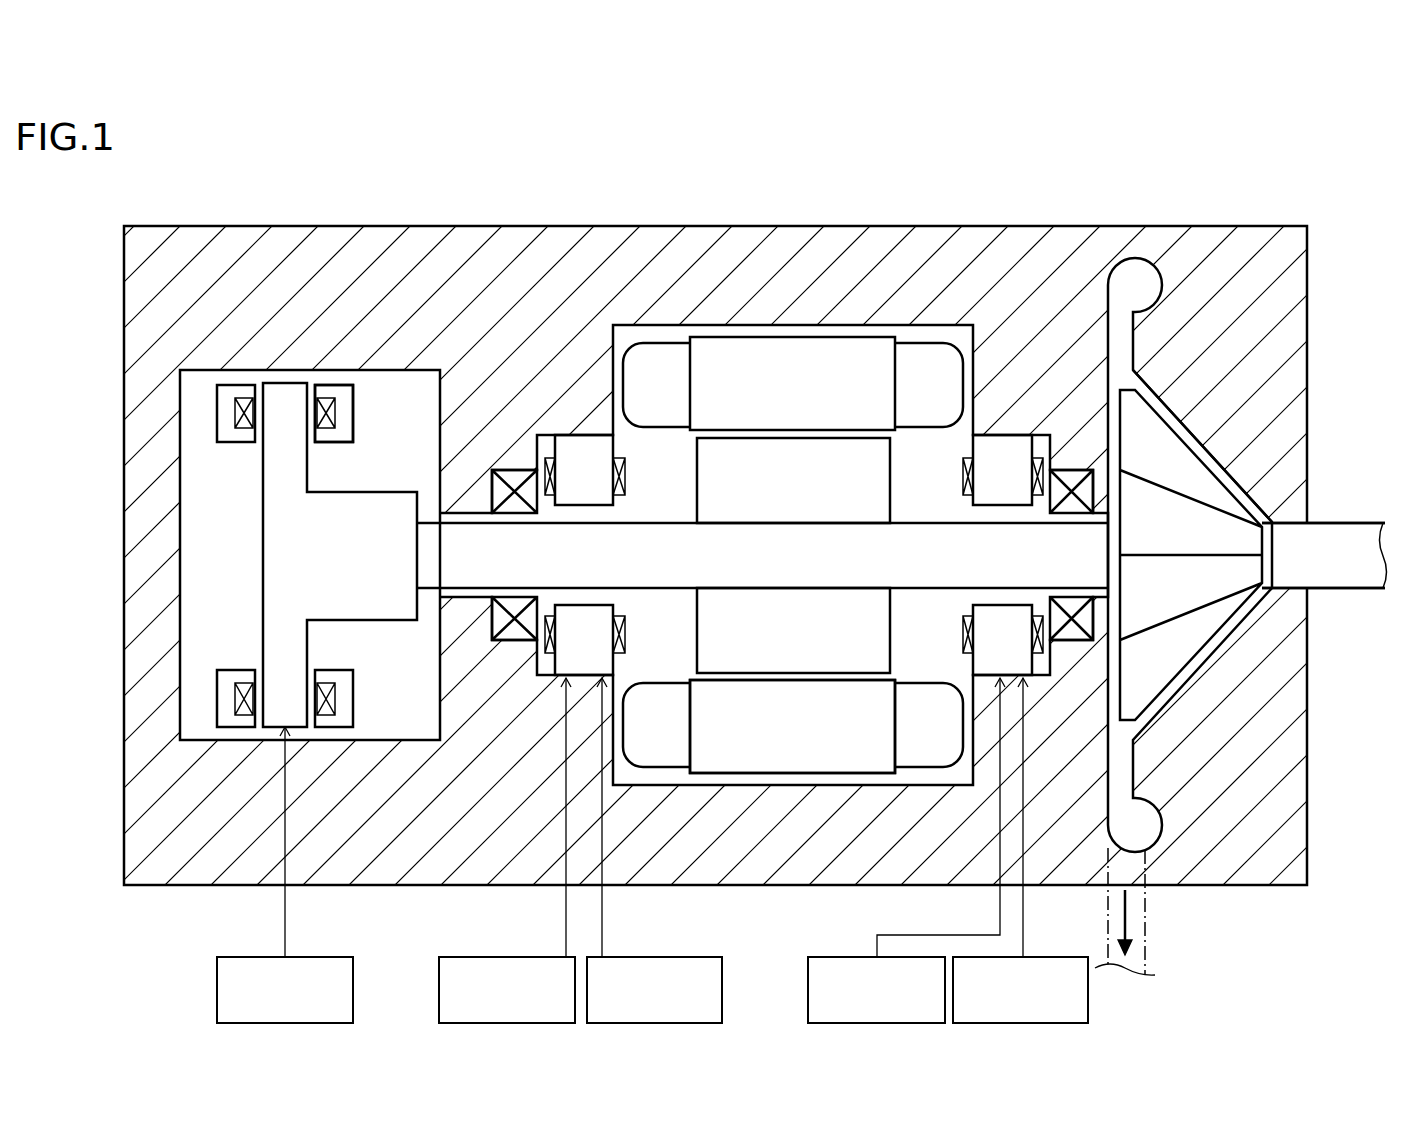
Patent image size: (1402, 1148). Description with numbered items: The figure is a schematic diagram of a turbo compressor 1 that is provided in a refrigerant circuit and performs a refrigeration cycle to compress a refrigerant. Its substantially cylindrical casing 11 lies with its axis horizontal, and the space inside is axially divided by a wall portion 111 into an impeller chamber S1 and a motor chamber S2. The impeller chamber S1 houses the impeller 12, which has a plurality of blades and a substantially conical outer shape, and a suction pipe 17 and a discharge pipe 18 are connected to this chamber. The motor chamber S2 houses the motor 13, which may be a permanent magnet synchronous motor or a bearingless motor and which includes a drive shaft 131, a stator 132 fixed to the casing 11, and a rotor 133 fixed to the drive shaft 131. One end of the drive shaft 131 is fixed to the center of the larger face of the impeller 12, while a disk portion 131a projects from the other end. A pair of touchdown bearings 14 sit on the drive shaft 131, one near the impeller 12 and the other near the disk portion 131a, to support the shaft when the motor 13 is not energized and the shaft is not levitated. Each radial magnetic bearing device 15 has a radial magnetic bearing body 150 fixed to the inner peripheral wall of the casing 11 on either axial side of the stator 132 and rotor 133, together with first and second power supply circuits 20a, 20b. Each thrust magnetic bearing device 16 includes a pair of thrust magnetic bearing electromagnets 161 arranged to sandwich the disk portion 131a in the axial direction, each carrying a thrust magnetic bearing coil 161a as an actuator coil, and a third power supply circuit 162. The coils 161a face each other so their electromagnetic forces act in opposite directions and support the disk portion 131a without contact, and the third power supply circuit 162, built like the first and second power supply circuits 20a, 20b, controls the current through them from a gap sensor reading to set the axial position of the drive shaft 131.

The turbo compressor 1 is at (1237, 163).
The casing 11 is at (1307, 322).
The wall portion 111 is at (1065, 662).
The impeller 12 is at (1190, 440).
The motor 13 is at (757, 333).
The drive shaft 131 is at (835, 575).
The disk portion 131a is at (263, 470).
The stator 132 is at (725, 742).
The rotor 133 is at (788, 655).
The touchdown bearing 14 is at (514, 470).
The radial magnetic bearing device 15 is at (592, 428).
The radial magnetic bearing body 150 is at (566, 434).
The thrust magnetic bearing device 16 is at (352, 385).
The thrust magnetic bearing electromagnet 161 is at (244, 396).
The thrust magnetic bearing coil 161a is at (321, 385).
The third power supply circuit 162 is at (253, 957).
The suction pipe 17 is at (1336, 590).
The discharge pipe 18 is at (1146, 908).
The first power supply circuit 20a is at (485, 957).
The second power supply circuit 20b is at (688, 957).
The impeller chamber S1 is at (1175, 475).
The motor chamber S2 is at (917, 662).